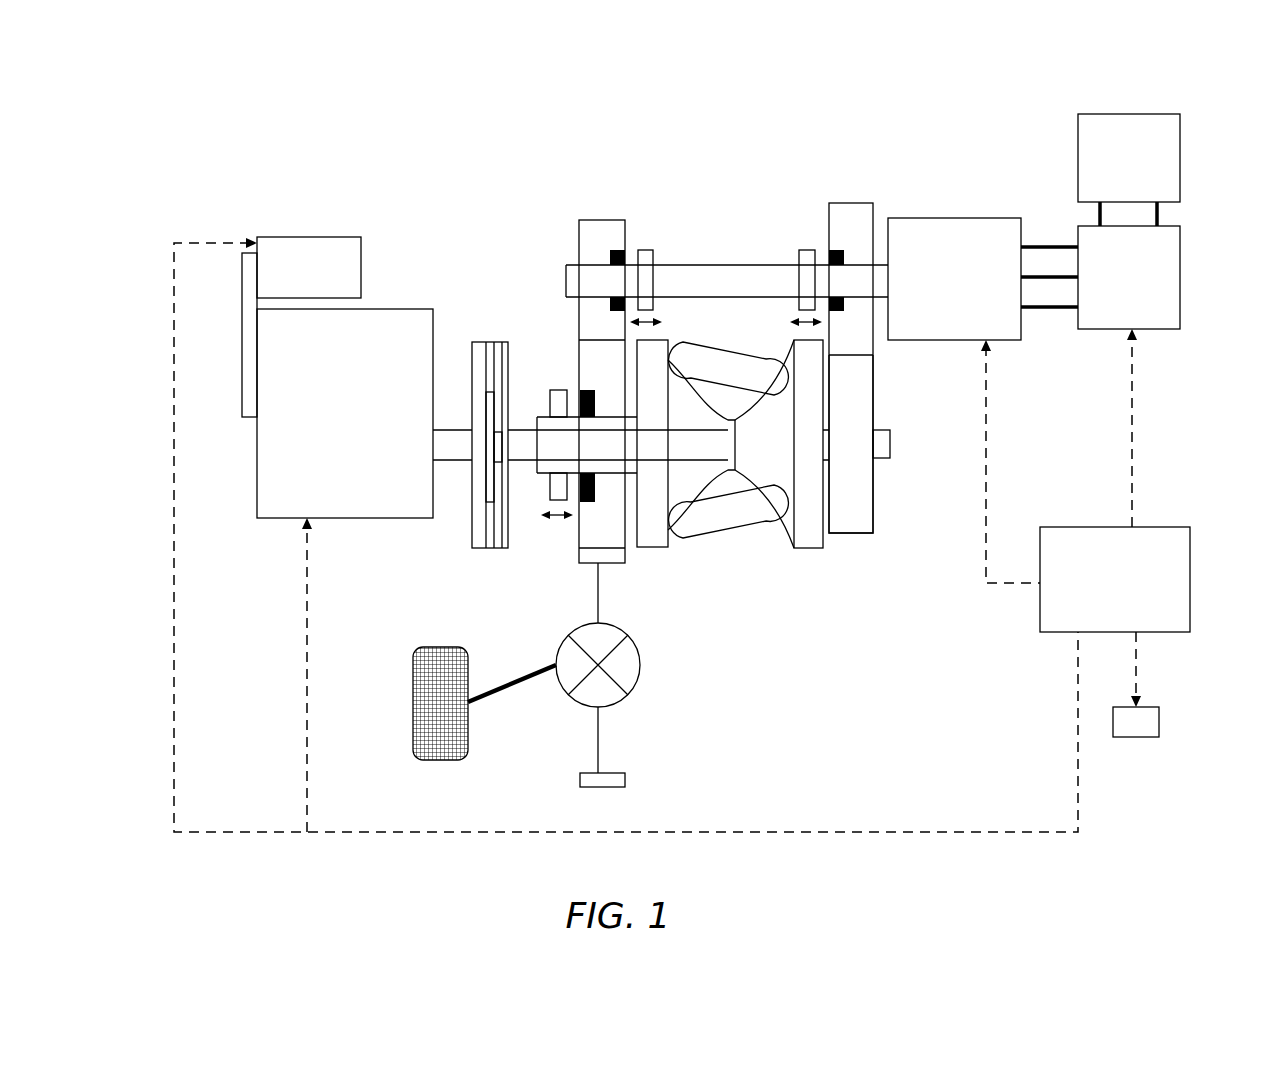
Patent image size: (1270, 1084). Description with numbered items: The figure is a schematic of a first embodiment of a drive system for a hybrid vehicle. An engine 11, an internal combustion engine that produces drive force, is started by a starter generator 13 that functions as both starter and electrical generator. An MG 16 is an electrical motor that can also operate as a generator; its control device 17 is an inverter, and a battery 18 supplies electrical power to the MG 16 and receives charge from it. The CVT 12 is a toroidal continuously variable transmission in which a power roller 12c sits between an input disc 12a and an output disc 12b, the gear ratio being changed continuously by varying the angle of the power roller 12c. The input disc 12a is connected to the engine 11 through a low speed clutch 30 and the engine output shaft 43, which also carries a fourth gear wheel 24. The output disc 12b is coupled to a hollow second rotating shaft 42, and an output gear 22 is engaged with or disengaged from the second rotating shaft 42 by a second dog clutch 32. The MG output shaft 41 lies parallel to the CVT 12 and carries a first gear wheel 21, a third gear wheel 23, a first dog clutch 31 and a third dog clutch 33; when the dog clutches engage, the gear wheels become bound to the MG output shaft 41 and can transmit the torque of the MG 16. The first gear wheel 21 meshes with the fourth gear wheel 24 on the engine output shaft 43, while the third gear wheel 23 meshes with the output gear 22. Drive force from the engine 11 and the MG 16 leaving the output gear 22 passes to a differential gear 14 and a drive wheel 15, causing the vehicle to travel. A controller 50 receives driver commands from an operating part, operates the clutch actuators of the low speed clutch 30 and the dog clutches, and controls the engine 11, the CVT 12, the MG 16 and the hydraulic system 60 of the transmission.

The engine 11 is at (285, 503).
The CVT 12 is at (776, 596).
The input disc 12a is at (810, 545).
The output disc 12b is at (652, 547).
The power roller 12c is at (702, 533).
The starter generator 13 is at (344, 252).
The differential gear 14 is at (568, 677).
The drive wheel 15 is at (418, 750).
The MG 16 is at (1005, 322).
The control device 17 is at (1167, 322).
The battery 18 is at (1177, 180).
The first gear wheel 21 is at (850, 212).
The output gear 22 is at (593, 533).
The third gear wheel 23 is at (588, 228).
The fourth gear wheel 24 is at (865, 530).
The low speed clutch 30 is at (478, 350).
The first dog clutch 31 is at (805, 250).
The second dog clutch 32 is at (557, 393).
The third dog clutch 33 is at (645, 252).
The MG output shaft 41 is at (752, 262).
The second rotating shaft 42 is at (538, 418).
The engine output shaft 43 is at (890, 445).
The controller 50 is at (1168, 625).
The hydraulic system 60 is at (1145, 730).